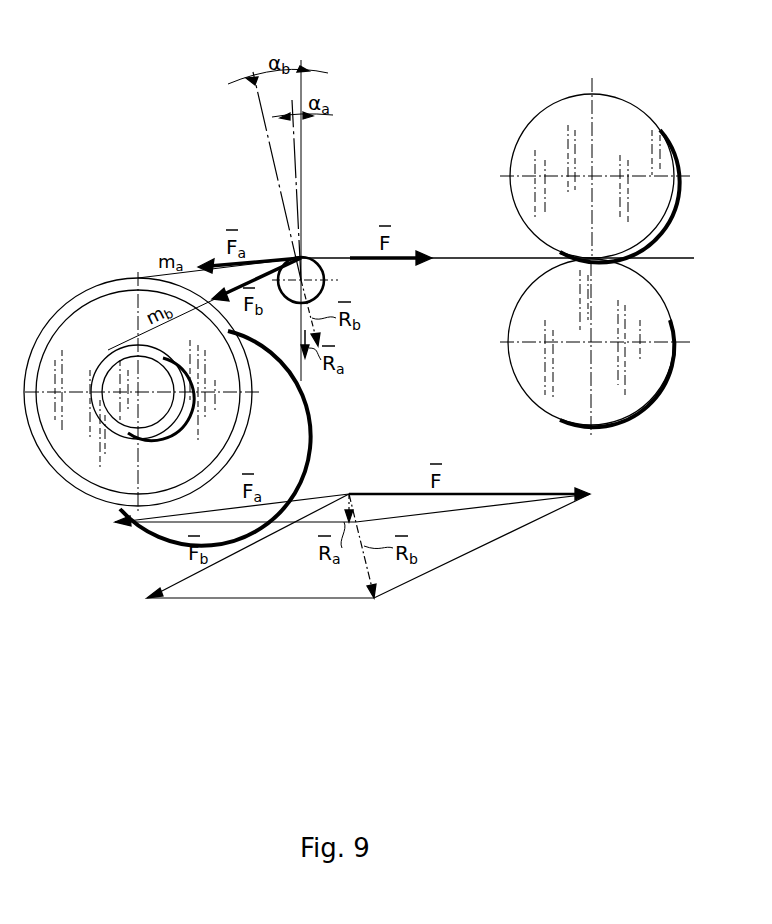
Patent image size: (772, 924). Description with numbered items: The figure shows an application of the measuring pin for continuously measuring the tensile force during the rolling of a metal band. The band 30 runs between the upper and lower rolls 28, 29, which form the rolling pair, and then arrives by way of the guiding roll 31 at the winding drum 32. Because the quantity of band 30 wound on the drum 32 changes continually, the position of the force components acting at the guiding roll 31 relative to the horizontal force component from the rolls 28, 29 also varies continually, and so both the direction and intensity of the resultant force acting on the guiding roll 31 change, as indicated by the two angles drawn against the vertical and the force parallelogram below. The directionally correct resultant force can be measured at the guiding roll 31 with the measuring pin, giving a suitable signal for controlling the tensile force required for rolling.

The roll 28 is at (621, 118).
The roll 29 is at (650, 380).
The band 30 is at (667, 257).
The guiding roll 31 is at (308, 257).
The winding drum 32 is at (90, 284).